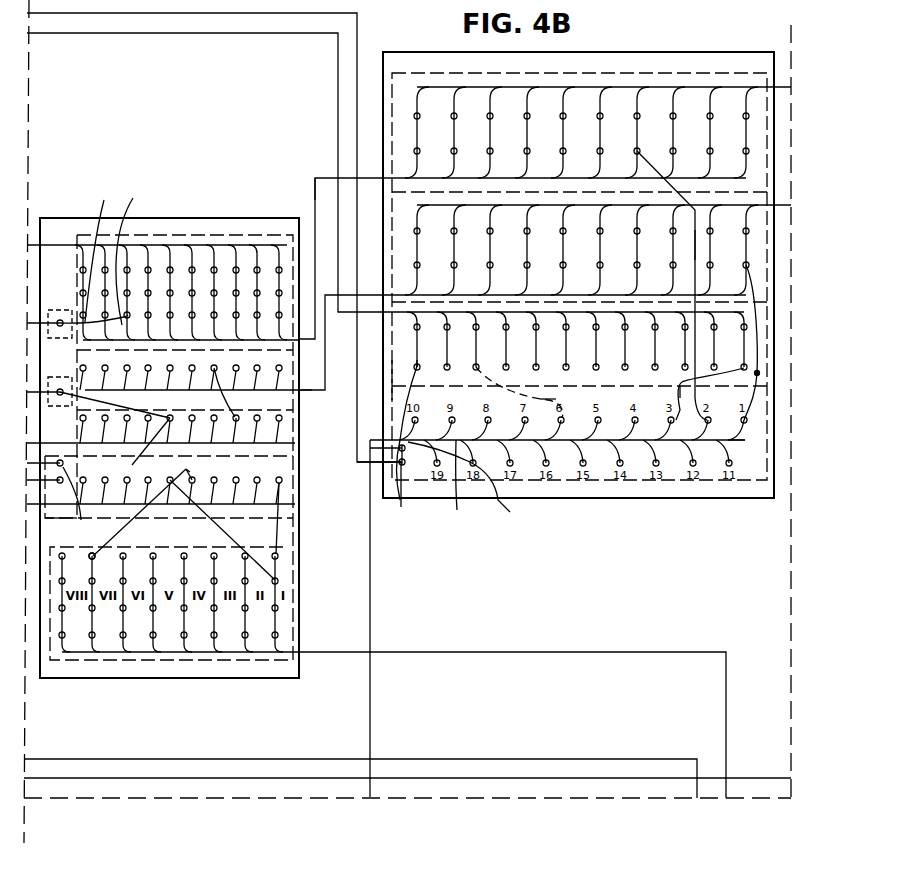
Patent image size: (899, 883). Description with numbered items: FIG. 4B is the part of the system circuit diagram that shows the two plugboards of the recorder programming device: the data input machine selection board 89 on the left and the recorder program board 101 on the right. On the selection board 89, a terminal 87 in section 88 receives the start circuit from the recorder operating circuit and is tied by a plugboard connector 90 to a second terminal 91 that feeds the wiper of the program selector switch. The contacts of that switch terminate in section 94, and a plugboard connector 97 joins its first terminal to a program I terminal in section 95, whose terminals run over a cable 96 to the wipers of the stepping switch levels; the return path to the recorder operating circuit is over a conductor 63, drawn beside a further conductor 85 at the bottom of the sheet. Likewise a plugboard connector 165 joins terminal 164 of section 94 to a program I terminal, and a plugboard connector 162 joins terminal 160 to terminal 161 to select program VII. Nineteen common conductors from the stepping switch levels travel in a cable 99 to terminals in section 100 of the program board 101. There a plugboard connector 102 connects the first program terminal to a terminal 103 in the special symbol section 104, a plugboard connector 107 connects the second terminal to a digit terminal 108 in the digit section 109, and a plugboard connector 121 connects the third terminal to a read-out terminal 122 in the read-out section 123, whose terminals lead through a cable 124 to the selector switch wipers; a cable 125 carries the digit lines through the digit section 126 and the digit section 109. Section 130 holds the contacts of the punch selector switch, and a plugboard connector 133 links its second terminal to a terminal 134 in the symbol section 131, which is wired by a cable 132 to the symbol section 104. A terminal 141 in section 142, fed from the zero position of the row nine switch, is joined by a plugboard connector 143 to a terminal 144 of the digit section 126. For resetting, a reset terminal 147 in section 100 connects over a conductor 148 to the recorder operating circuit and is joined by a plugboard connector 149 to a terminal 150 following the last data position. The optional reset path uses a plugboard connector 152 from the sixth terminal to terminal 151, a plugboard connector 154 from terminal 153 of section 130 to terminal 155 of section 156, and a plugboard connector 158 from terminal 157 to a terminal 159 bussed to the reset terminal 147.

The conductor 63 is at (585, 758).
The conductor 85 is at (445, 777).
The terminal 87 is at (60, 460).
The section 88 is at (54, 518).
The selection board 89 is at (299, 490).
The plugboard connector 90 is at (82, 505).
The second terminal 91 is at (47, 490).
The section 94 is at (299, 500).
The section 95 is at (299, 558).
The cable 96 is at (398, 653).
The plugboard connector 97 is at (299, 525).
The cable 99 is at (370, 587).
The section 100 is at (597, 498).
The recorder program board 101 is at (710, 498).
The plugboard connector 102 is at (745, 420).
The terminal 103 is at (745, 266).
The special symbol section 104 is at (390, 227).
The plugboard connector 107 is at (696, 244).
The digit terminal 108 is at (648, 148).
The digit section 109 is at (668, 76).
The plugboard connector 121 is at (680, 390).
The read-out terminal 122 is at (744, 366).
The read-out section 123 is at (390, 378).
The cable 124 is at (338, 68).
The cable 125 is at (315, 192).
The digit section 126 is at (165, 234).
The section 130 is at (291, 438).
The symbol section 131 is at (306, 393).
The cable 132 is at (325, 380).
The plugboard connector 133 is at (233, 413).
The terminal 134 is at (213, 367).
The terminal 141 is at (60, 322).
The section 142 is at (67, 306).
The plugboard connector 143 is at (91, 254).
The terminal 144 is at (141, 255).
The reset terminal 147 is at (402, 466).
The conductor 148 is at (358, 29).
The plugboard connector 149 is at (474, 483).
The terminal 150 is at (476, 484).
The terminal 151 is at (476, 366).
The plugboard connector 152 is at (549, 401).
The terminal 153 is at (136, 447).
The plugboard connector 154 is at (138, 403).
The terminal 155 is at (68, 367).
The section 156 is at (77, 339).
The terminal 157 is at (417, 365).
The plugboard connector 158 is at (412, 379).
The terminal 159 is at (414, 494).
The terminal 160 is at (186, 470).
The terminal 161 is at (93, 557).
The plugboard connector 162 is at (122, 535).
The terminal 164 is at (185, 470).
The plugboard connector 165 is at (230, 527).